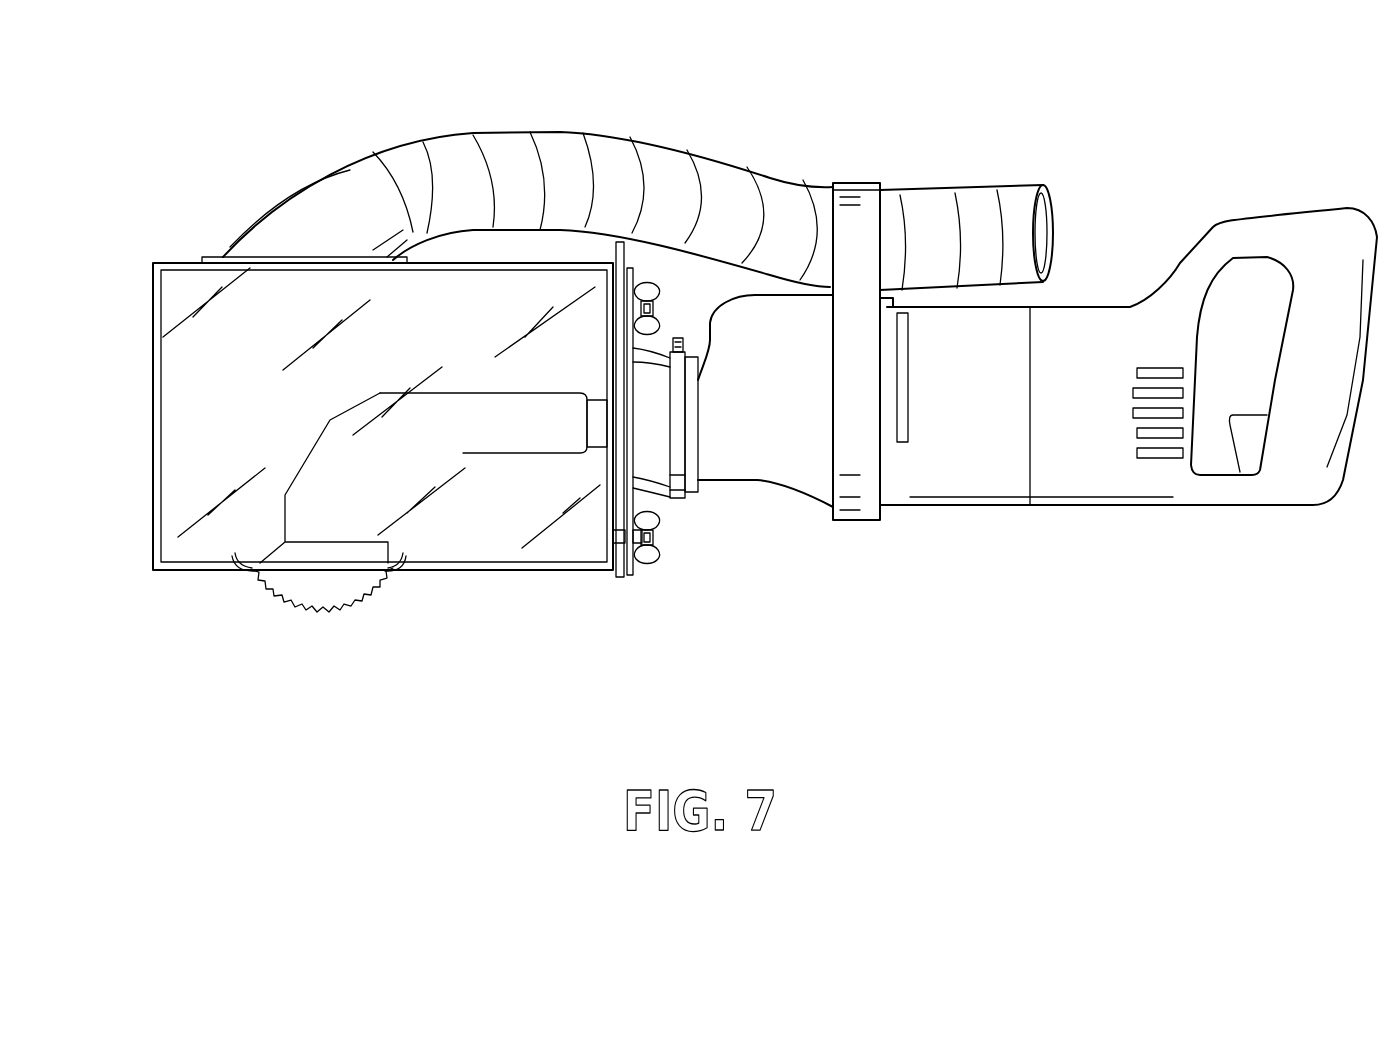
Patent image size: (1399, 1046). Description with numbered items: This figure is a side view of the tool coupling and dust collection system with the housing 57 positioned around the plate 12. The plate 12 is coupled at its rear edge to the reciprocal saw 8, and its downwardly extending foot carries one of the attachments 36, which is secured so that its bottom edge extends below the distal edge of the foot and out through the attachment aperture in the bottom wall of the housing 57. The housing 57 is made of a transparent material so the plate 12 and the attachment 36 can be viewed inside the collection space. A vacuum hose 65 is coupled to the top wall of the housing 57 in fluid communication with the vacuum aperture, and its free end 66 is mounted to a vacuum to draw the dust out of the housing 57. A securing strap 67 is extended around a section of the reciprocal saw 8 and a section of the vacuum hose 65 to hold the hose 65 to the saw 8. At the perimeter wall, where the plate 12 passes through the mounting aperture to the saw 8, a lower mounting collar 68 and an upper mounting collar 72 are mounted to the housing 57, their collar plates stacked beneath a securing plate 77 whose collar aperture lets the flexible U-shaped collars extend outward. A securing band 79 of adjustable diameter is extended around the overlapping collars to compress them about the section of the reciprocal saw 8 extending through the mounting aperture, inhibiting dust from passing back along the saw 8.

The reciprocal saw 8 is at (1100, 506).
The plate 12 is at (463, 453).
The attachments 36 is at (312, 612).
The housing 57 is at (153, 570).
The vacuum hose 65 is at (512, 172).
The free end 66 is at (1050, 233).
The securing strap 67 is at (862, 210).
The lower mounting collar 68 is at (617, 476).
The upper mounting collar 72 is at (616, 560).
The securing plate 77 is at (633, 569).
The securing band 79 is at (680, 410).